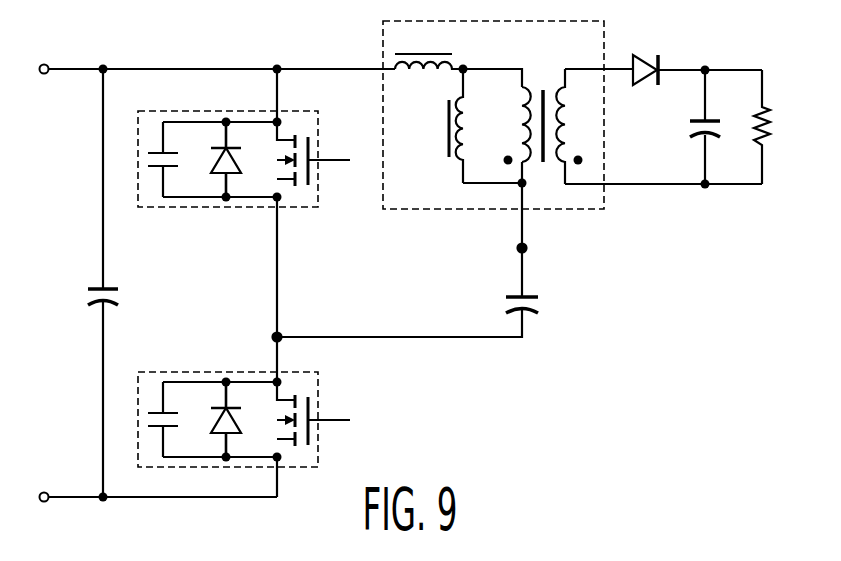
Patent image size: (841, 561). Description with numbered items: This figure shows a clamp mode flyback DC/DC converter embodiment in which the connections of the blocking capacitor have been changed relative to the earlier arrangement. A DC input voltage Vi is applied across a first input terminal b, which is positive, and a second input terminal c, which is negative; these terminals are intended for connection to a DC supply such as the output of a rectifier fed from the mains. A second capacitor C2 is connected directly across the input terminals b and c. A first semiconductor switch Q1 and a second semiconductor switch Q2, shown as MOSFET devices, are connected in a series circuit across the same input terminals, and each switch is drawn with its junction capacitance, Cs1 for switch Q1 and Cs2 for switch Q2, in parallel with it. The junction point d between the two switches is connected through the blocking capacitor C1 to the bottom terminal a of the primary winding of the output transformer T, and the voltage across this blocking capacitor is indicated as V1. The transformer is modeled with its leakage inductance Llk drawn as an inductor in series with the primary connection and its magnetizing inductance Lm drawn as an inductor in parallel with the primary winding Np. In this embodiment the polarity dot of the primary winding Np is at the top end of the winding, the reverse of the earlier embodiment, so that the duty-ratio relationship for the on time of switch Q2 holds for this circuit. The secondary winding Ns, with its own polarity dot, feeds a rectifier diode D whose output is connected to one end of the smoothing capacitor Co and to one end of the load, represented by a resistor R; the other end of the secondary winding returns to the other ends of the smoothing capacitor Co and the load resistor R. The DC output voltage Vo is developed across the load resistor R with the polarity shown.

The first input terminal b is at (34, 69).
The second input terminal c is at (35, 497).
The junction point a is at (513, 248).
The junction point d is at (268, 337).
The DC input voltage Vi is at (63, 280).
The second capacitor C2 is at (120, 295).
The junction capacitance Cs2 is at (228, 174).
The second semiconductor switch Q2 is at (314, 154).
The junction capacitance Cs1 is at (228, 406).
The first semiconductor switch Q1 is at (314, 414).
The output transformer T is at (400, 316).
The blocking capacitor C1 is at (503, 305).
The capacitor voltage V1 is at (544, 304).
The leakage inductance Llk is at (429, 49).
The magnetizing inductance Lm is at (437, 126).
The primary winding Np is at (516, 126).
The secondary winding Ns is at (577, 126).
The rectifier diode D is at (645, 58).
The smoothing capacitor Co is at (691, 127).
The load resistor R is at (754, 127).
The DC output voltage Vo is at (782, 128).